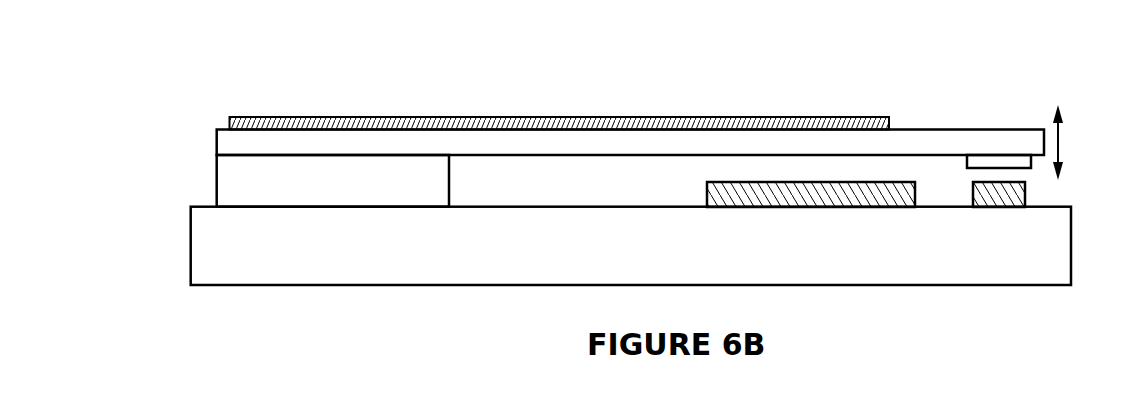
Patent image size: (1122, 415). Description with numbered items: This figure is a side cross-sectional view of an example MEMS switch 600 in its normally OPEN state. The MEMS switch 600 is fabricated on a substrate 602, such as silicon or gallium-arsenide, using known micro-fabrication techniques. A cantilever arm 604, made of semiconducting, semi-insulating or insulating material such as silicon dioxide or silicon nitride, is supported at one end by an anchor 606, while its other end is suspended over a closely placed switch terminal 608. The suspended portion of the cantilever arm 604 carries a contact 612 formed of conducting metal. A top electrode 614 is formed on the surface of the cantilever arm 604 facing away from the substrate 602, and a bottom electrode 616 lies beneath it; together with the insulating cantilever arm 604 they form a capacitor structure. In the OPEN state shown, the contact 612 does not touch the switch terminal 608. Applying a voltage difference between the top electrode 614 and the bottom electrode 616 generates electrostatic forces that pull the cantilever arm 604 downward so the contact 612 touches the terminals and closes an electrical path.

The MEMS switch 600 is at (641, 149).
The substrate 602 is at (299, 258).
The cantilever arm 604 is at (922, 124).
The anchor 606 is at (299, 192).
The switch terminal 608 is at (1007, 193).
The contact 612 is at (973, 143).
The top electrode 614 is at (423, 116).
The bottom electrode 616 is at (824, 195).